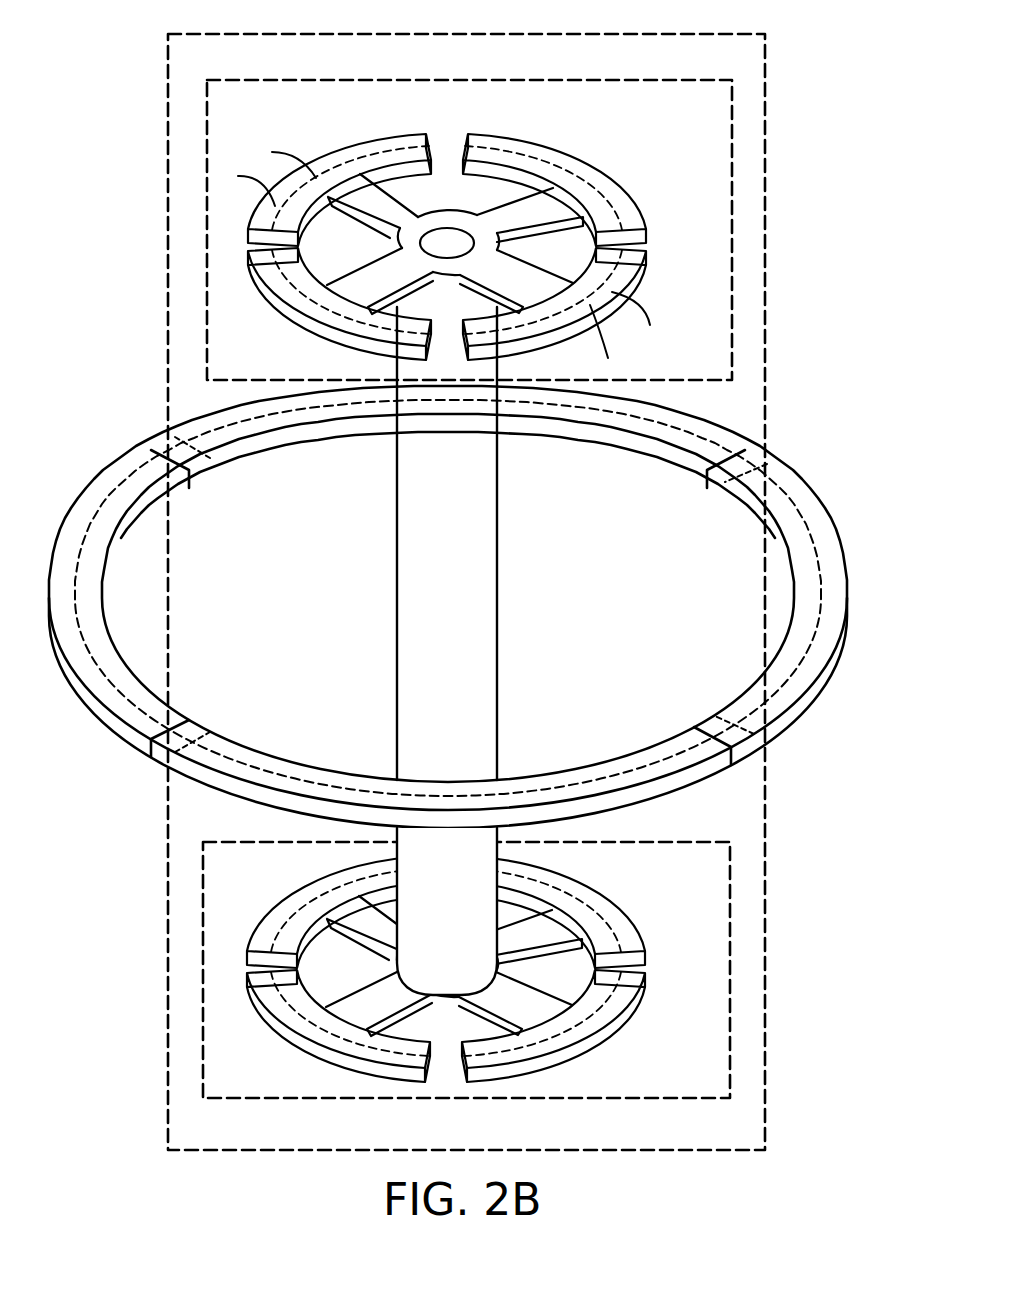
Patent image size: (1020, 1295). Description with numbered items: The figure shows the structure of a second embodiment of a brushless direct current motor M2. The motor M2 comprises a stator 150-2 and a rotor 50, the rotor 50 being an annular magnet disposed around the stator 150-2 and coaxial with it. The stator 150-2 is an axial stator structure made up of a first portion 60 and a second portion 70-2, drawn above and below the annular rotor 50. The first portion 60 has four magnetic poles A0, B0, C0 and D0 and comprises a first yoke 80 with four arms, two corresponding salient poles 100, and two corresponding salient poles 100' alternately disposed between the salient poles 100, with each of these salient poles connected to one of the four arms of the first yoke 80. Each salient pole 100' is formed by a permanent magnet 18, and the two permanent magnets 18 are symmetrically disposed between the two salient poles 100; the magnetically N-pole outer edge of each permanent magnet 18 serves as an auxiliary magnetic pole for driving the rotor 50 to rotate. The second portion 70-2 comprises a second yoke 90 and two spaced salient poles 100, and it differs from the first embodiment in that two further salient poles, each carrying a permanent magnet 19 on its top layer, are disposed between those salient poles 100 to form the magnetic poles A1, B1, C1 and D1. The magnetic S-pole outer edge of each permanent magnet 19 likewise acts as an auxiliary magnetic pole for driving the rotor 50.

The brushless direct current motor M2 is at (102, 71).
The stator 150-2 is at (760, 34).
The first portion 60 is at (470, 80).
The second portion 70-2 is at (468, 1100).
The rotor 50 is at (128, 456).
The first yoke 80 is at (448, 216).
The second yoke 90 is at (510, 990).
The salient pole 100 is at (466, 586).
The salient pole 100' is at (473, 239).
The permanent magnet 18 is at (473, 239).
The permanent magnet 19 is at (474, 973).
The magnetic pole A0 is at (318, 149).
The magnetic pole B0 is at (655, 266).
The magnetic pole C0 is at (510, 133).
The magnetic pole D0 is at (303, 327).
The magnetic pole A1 is at (316, 873).
The magnetic pole B1 is at (650, 984).
The magnetic pole C1 is at (548, 864).
The magnetic pole D1 is at (322, 1050).